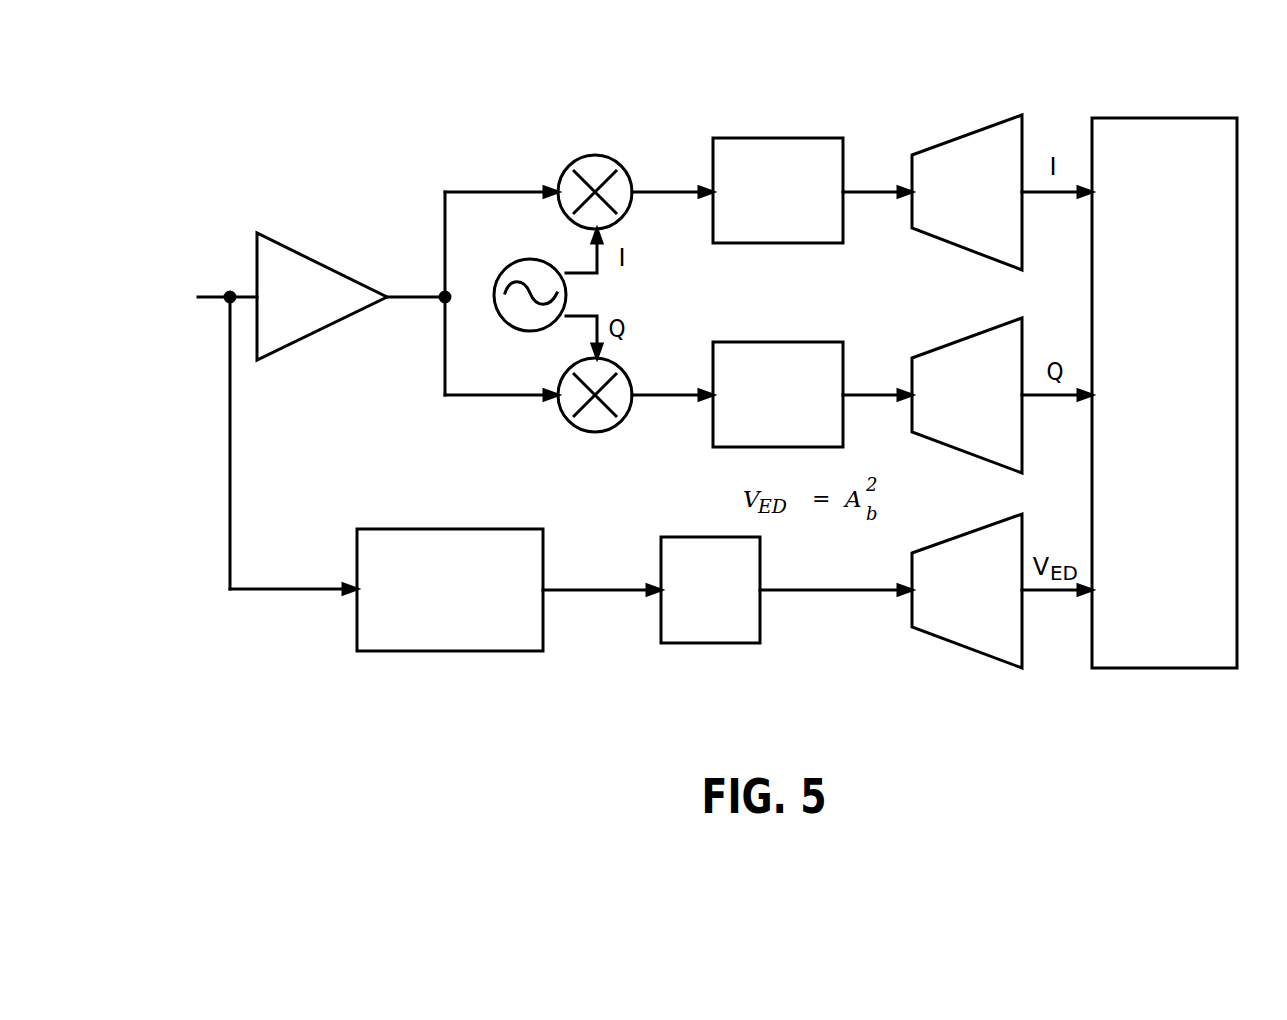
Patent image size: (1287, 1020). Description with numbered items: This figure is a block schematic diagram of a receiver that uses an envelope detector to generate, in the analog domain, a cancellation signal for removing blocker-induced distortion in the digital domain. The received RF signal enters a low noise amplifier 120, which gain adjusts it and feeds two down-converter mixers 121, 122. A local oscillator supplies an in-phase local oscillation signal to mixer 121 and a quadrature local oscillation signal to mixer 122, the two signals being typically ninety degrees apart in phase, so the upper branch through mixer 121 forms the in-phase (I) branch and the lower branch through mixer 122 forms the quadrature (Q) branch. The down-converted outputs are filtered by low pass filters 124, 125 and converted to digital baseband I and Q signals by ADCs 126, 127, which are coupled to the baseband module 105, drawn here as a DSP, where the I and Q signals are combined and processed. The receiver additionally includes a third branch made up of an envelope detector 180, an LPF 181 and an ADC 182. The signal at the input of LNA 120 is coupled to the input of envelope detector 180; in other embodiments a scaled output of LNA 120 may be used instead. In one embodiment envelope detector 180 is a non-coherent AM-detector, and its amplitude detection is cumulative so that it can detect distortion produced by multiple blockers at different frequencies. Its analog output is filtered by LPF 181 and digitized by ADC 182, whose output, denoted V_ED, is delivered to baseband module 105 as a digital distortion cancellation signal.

The baseband module 105 is at (1160, 117).
The low noise amplifier 120 is at (300, 250).
The down-converter mixer 121 is at (603, 153).
The down-converter mixer 122 is at (593, 432).
The low pass filter 124 is at (823, 135).
The low pass filter 125 is at (823, 338).
The ADC 126 is at (970, 135).
The ADC 127 is at (970, 335).
The envelope detector 180 is at (430, 651).
The LPF 181 is at (680, 643).
The ADC 182 is at (940, 643).